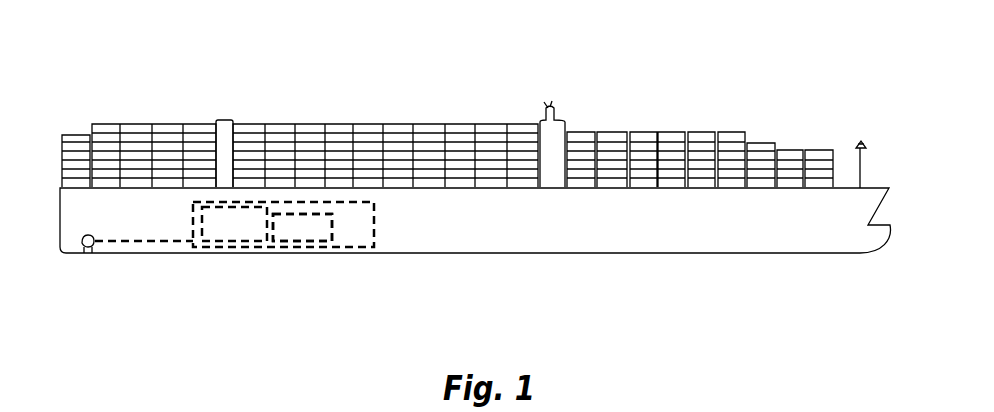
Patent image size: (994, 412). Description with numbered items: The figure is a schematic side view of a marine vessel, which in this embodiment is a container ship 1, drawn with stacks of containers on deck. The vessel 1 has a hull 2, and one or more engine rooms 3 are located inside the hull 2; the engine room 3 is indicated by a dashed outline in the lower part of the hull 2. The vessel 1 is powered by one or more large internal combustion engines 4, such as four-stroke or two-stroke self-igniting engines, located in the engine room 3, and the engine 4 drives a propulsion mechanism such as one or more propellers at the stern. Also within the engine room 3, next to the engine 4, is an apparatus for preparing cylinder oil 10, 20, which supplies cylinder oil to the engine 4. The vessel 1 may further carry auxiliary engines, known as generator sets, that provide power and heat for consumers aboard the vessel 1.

The container ship 1 is at (693, 70).
The hull 2 is at (780, 235).
The engine room 3 is at (359, 235).
The internal combustion engine 4 is at (241, 235).
The apparatus for preparing cylinder oil 10 is at (302, 241).
The apparatus for preparing cylinder oil 20 is at (302, 241).